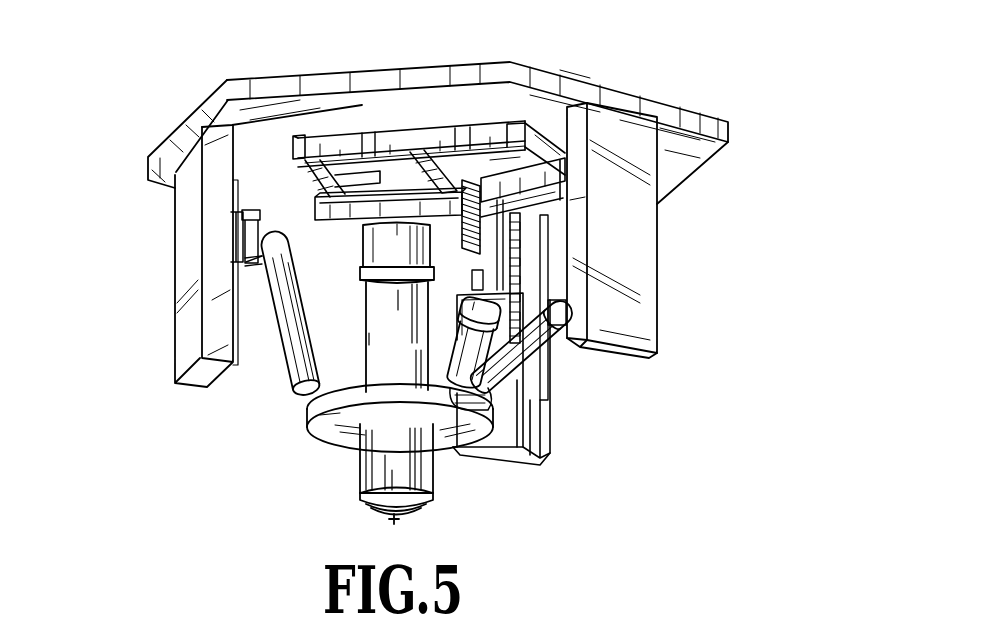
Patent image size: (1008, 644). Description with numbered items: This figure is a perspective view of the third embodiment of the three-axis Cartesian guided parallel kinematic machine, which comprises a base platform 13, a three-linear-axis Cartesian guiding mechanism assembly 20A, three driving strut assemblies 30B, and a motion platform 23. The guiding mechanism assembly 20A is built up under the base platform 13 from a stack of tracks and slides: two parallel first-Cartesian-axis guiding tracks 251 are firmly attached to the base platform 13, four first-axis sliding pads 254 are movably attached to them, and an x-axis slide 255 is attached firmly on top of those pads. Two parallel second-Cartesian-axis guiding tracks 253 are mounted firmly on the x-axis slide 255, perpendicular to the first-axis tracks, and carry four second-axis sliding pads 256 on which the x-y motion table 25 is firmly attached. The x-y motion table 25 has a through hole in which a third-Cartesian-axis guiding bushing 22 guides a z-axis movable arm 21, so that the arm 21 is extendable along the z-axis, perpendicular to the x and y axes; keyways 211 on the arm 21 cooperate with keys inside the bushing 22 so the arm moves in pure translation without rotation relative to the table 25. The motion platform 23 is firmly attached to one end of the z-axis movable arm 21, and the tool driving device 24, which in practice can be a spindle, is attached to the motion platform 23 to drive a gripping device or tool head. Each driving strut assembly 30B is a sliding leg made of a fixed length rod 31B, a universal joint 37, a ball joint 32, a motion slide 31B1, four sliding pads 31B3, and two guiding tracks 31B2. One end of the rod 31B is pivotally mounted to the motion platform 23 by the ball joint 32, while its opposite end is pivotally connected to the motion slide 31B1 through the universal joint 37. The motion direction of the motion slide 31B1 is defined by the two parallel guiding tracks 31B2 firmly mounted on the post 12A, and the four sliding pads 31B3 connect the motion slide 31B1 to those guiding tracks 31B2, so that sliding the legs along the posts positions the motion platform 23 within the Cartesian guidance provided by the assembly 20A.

The base platform 13 is at (660, 103).
The post 12A is at (660, 193).
The x-y motion table 25 is at (325, 218).
The first-Cartesian-axis guiding track 251 is at (411, 150).
The second-Cartesian-axis guiding track 253 is at (463, 135).
The first-axis sliding pad 254 is at (343, 174).
The x-axis slide 255 is at (371, 136).
The second-axis sliding pad 256 is at (466, 186).
The sliding pad 31B3 is at (240, 232).
The third-Cartesian-axis guiding bushing 22 is at (377, 240).
The keyway 211 is at (363, 303).
The three-linear-axis Cartesian guiding mechanism assembly 20A is at (358, 344).
The z-axis movable arm 21 is at (322, 400).
The motion platform 23 is at (325, 432).
The tool driving device 24 is at (362, 466).
The ball joint 32 is at (478, 435).
The driving strut assembly 30B is at (520, 395).
The universal joint 37 is at (548, 385).
The fixed length rod 31B is at (540, 330).
The motion slide 31B1 is at (510, 313).
The guiding track 31B2 is at (523, 252).